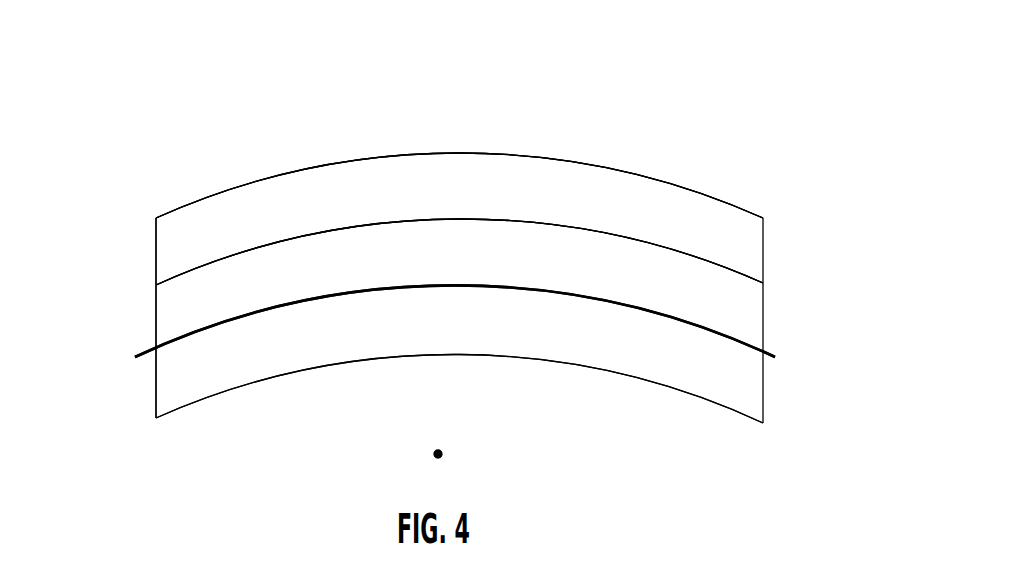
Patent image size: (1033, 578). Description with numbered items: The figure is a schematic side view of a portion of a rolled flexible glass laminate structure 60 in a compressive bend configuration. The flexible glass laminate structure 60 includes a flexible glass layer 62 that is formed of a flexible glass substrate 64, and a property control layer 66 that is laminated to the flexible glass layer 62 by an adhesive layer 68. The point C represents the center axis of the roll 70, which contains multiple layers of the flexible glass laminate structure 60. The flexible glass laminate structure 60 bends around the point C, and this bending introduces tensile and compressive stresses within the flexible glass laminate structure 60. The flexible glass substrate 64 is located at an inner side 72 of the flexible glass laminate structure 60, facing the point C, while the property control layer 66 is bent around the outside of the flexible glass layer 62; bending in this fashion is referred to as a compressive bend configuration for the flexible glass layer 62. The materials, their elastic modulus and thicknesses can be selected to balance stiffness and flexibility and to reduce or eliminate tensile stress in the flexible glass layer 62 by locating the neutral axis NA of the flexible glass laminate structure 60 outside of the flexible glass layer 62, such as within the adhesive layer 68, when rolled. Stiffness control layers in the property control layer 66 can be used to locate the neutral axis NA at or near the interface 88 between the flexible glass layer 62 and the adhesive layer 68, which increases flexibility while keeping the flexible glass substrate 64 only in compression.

The flexible glass laminate structure 60 is at (698, 111).
The roll 70 is at (548, 102).
The property control layer 66 is at (151, 191).
The adhesive layer 68 is at (695, 277).
The neutral axis NA is at (168, 330).
The interface 88 is at (505, 289).
The flexible glass substrate 64 is at (236, 357).
The flexible glass layer 62 is at (150, 366).
The inner side 72 is at (302, 408).
The point C is at (442, 451).